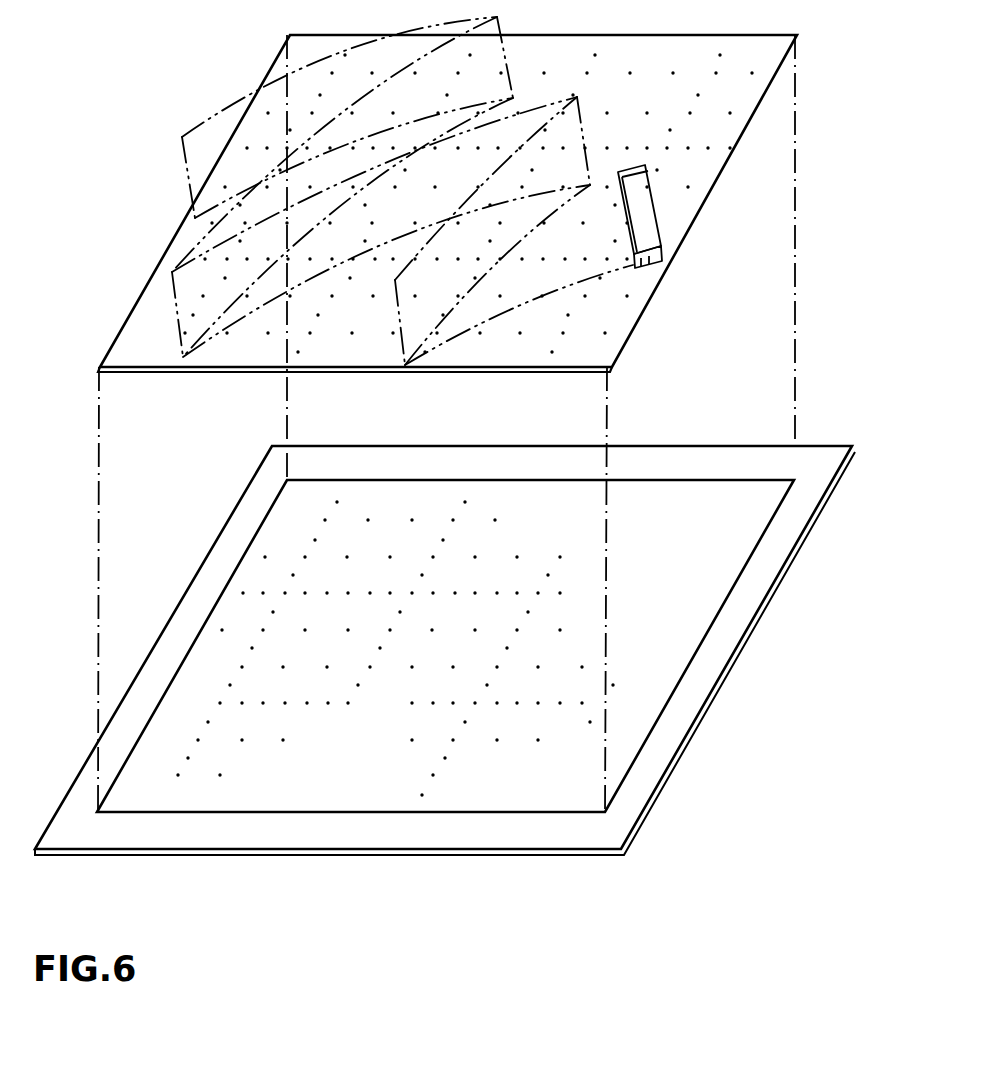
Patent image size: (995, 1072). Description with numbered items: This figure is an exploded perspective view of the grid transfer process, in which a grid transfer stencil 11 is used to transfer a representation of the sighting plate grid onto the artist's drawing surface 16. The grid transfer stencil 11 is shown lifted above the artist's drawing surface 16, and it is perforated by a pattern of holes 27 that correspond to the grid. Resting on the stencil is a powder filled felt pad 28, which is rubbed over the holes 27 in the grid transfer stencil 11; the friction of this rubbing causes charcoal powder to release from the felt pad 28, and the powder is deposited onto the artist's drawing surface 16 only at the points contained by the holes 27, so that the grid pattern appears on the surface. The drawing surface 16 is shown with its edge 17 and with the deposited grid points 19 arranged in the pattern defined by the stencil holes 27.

The grid transfer stencil 11 is at (765, 103).
The holes 27 is at (677, 132).
The powder filled felt pad 28 is at (657, 208).
The artist's drawing surface 16 is at (668, 649).
The tray bottom edge 17 is at (694, 695).
The perforations in tray bottom 19 is at (540, 745).